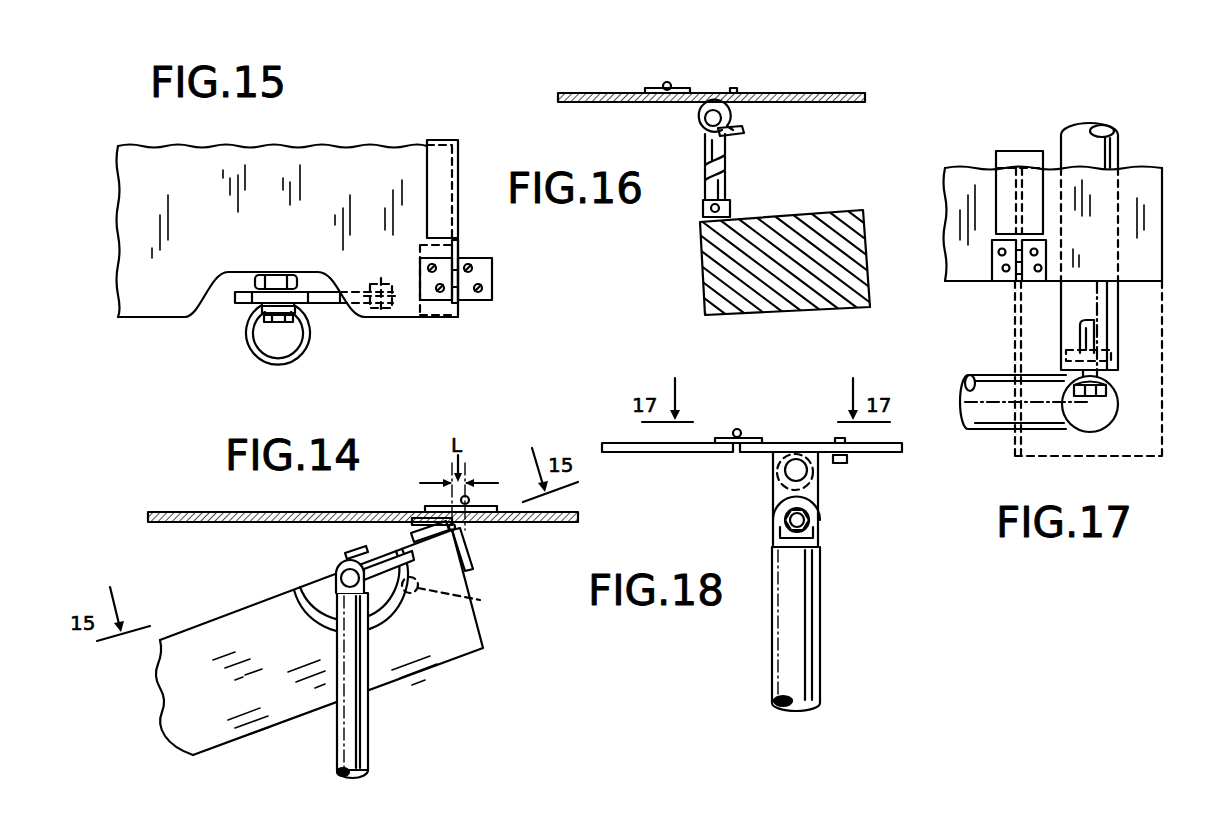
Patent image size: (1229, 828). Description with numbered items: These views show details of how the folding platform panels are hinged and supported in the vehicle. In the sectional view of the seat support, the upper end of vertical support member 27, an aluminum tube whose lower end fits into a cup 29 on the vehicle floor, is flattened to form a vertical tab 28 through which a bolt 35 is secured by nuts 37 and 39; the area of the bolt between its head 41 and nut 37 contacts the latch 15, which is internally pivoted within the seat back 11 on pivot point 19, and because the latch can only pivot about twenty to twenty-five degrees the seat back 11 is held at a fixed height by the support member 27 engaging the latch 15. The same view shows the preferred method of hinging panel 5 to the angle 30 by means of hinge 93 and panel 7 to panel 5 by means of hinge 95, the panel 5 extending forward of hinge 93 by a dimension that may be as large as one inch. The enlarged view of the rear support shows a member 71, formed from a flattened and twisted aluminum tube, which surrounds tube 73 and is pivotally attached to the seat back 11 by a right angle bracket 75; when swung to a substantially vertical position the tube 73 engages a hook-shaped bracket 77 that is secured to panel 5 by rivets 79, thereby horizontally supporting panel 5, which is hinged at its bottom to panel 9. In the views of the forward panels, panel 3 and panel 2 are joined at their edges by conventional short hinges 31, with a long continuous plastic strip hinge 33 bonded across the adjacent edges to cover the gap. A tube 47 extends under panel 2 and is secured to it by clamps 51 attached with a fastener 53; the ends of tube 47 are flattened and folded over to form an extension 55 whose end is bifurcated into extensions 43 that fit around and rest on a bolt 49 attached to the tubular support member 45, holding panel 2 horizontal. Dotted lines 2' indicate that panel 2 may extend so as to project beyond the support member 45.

In FIG. 17, the panel 2 is at (1072, 224).
In FIG. 18, the panel 2 is at (843, 450).
In FIG. 17, the extended panel position 2' is at (1106, 378).
In FIG. 17, the panel 3 is at (962, 168).
In FIG. 18, the panel 3 is at (641, 452).
In FIG. 16, the panel 5 is at (802, 93).
In FIG. 14, the panel 5 is at (172, 512).
In FIG. 14, the panel 7 is at (546, 523).
In FIG. 16, the panel 9 is at (598, 93).
In FIG. 15, the seat back 11 is at (348, 162).
In FIG. 16, the seat back 11 is at (825, 232).
In FIG. 14, the seat back 11 is at (222, 632).
In FIG. 15, the latch 15 is at (327, 300).
In FIG. 14, the latch 15 is at (333, 566).
In FIG. 15, the pivot point 19 is at (380, 307).
In FIG. 14, the pivot point 19 is at (458, 596).
In FIG. 15, the vertical support member 27 is at (273, 347).
In FIG. 14, the vertical support member 27 is at (358, 730).
In FIG. 14, the vertical tab 28 is at (363, 587).
In FIG. 15, the cup 29 is at (298, 362).
In FIG. 14, the cup 29 is at (351, 590).
In FIG. 15, the angle 30 is at (443, 140).
In FIG. 14, the angle 30 is at (470, 558).
In FIG. 16, the short hinge 31 is at (656, 88).
In FIG. 17, the short hinge 31 is at (1000, 282).
In FIG. 18, the short hinge 31 is at (751, 438).
In FIG. 17, the plastic strip hinge 33 is at (1020, 160).
In FIG. 15, the bolt 35 is at (242, 284).
In FIG. 15, the nut 37 is at (262, 309).
In FIG. 15, the nut 39 is at (268, 321).
In FIG. 15, the bolt head 41 is at (277, 275).
In FIG. 17, the bifurcated extensions 43 is at (1112, 355).
In FIG. 18, the bifurcated extensions 43 is at (821, 522).
In FIG. 17, the tubular support member 45 is at (1105, 412).
In FIG. 18, the tubular support member 45 is at (808, 633).
In FIG. 17, the tube 47 is at (1108, 157).
In FIG. 18, the tube 47 is at (813, 476).
In FIG. 17, the bolt 49 is at (1105, 390).
In FIG. 18, the clamp 51 is at (858, 455).
In FIG. 18, the fastener 53 is at (835, 438).
In FIG. 18, the extension 55 is at (773, 494).
In FIG. 16, the member 71 is at (708, 155).
In FIG. 16, the tube 73 is at (721, 118).
In FIG. 16, the right angle bracket 75 is at (703, 210).
In FIG. 16, the hook-shaped bracket 77 is at (732, 134).
In FIG. 16, the rivets 79 is at (733, 88).
In FIG. 15, the hinge 93 is at (458, 250).
In FIG. 14, the hinge 93 is at (412, 537).
In FIG. 15, the hinge 95 is at (483, 278).
In FIG. 14, the hinge 95 is at (425, 506).